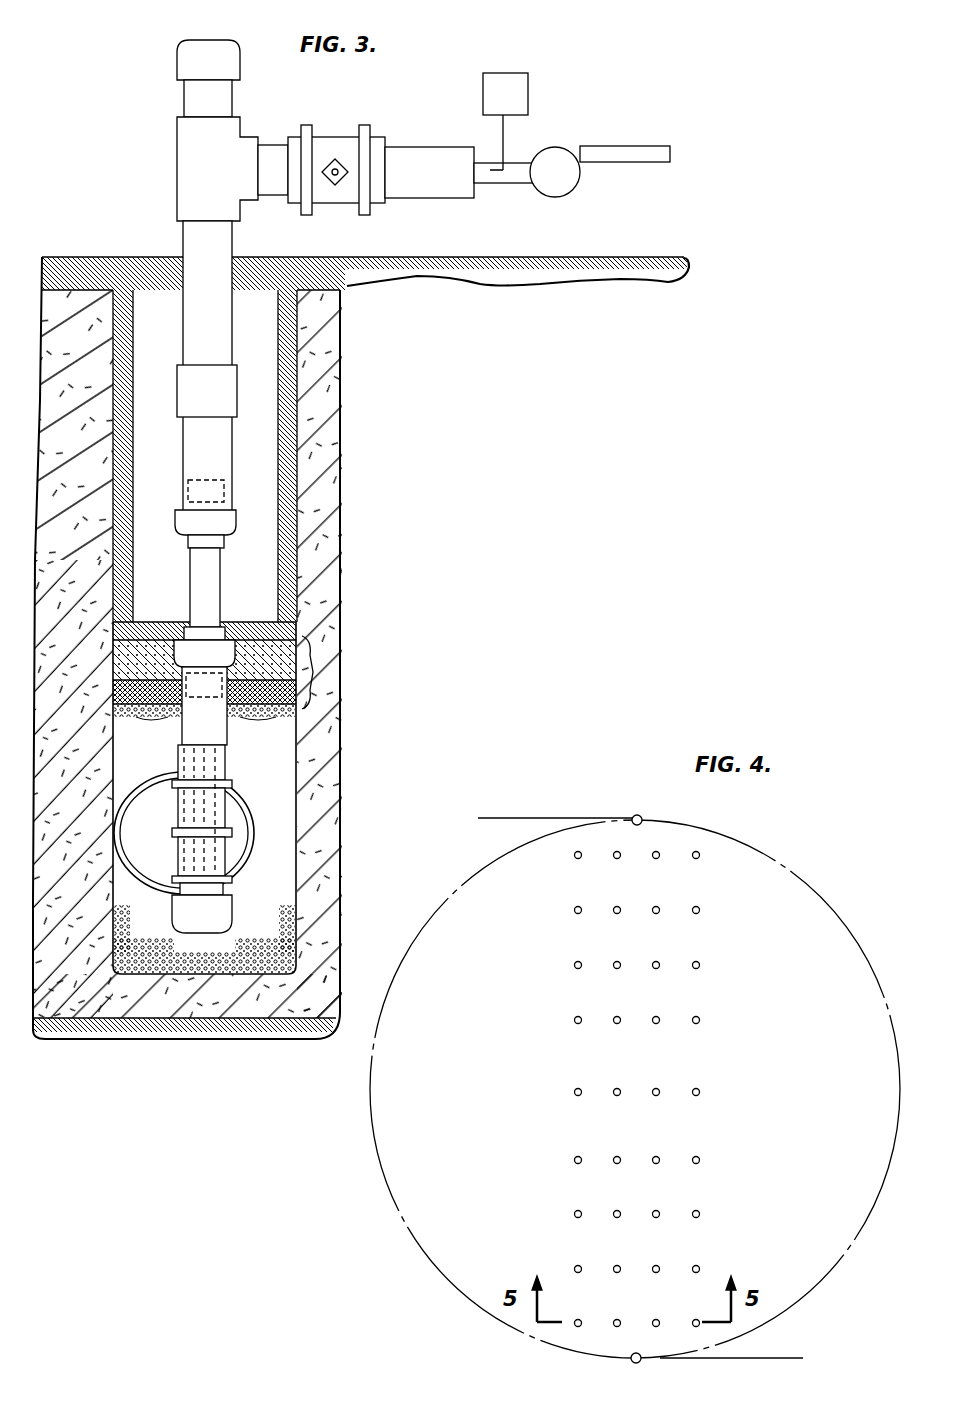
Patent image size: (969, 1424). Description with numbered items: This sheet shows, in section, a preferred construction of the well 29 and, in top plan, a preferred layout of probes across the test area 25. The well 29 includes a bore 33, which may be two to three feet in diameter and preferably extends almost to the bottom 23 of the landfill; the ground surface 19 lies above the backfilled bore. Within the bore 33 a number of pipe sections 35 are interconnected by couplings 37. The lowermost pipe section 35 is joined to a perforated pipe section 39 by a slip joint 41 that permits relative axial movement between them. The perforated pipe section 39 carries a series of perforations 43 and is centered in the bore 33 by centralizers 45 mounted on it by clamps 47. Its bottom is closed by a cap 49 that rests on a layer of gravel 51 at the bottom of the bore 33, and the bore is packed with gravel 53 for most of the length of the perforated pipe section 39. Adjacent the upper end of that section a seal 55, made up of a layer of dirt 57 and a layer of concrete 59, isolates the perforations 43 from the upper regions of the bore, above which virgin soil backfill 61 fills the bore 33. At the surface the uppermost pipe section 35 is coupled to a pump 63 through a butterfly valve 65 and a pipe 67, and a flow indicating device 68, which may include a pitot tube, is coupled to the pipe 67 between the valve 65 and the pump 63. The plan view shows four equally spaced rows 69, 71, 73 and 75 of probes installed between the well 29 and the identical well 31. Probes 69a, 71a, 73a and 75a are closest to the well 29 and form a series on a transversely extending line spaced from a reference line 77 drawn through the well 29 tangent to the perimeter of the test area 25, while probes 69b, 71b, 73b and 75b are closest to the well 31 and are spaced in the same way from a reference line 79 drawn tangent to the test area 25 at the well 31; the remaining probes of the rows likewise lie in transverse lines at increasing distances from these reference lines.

In FIG. 3, the ground surface 19 is at (76, 270).
In FIG. 3, the bottom of the landfill 23 is at (283, 1012).
In FIG. 4, the test area 25 is at (745, 846).
In FIG. 3, the well 29 is at (156, 222).
In FIG. 4, the well 29 is at (631, 1360).
In FIG. 4, the well 31 is at (638, 814).
In FIG. 3, the bore 33 is at (286, 290).
In FIG. 3, the pipe sections 35 is at (205, 336).
In FIG. 3, the couplings 37 is at (188, 391).
In FIG. 3, the perforated pipe section 39 is at (195, 727).
In FIG. 3, the slip joint 41 is at (205, 571).
In FIG. 3, the perforations 43 is at (225, 751).
In FIG. 3, the centralizers 45 is at (135, 779).
In FIG. 3, the clamps 47 is at (176, 852).
In FIG. 3, the cap 49 is at (210, 911).
In FIG. 3, the layer of gravel 51 is at (166, 958).
In FIG. 3, the gravel 53 is at (275, 846).
In FIG. 3, the seal 55 is at (316, 680).
In FIG. 3, the layer of dirt 57 is at (115, 698).
In FIG. 3, the layer of concrete 59 is at (125, 660).
In FIG. 3, the virgin soil backfill 61 is at (292, 462).
In FIG. 3, the pump 63 is at (555, 148).
In FIG. 3, the butterfly valve 65 is at (338, 160).
In FIG. 3, the pipe 67 is at (425, 150).
In FIG. 3, the flow indicating device 68 is at (518, 82).
In FIG. 4, the row of probes 69 is at (575, 1211).
In FIG. 4, the probe 69a is at (576, 1326).
In FIG. 4, the probe 69b is at (575, 858).
In FIG. 4, the row of probes 71 is at (617, 1096).
In FIG. 4, the probe 71a is at (615, 1319).
In FIG. 4, the probe 71b is at (617, 860).
In FIG. 4, the row of probes 73 is at (656, 1096).
In FIG. 4, the probe 73a is at (668, 1290).
In FIG. 4, the probe 73b is at (655, 858).
In FIG. 4, the row of probes 75 is at (699, 1212).
In FIG. 4, the probe 75a is at (696, 1328).
In FIG. 4, the probe 75b is at (698, 859).
In FIG. 4, the reference line 77 is at (735, 1358).
In FIG. 4, the reference line 79 is at (532, 818).